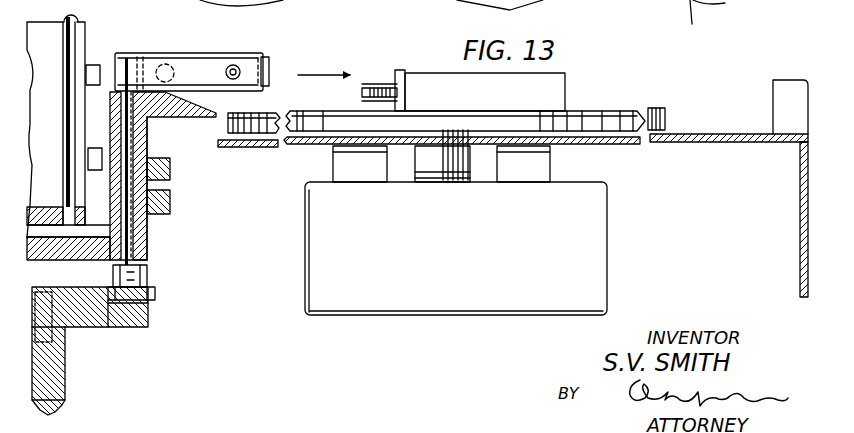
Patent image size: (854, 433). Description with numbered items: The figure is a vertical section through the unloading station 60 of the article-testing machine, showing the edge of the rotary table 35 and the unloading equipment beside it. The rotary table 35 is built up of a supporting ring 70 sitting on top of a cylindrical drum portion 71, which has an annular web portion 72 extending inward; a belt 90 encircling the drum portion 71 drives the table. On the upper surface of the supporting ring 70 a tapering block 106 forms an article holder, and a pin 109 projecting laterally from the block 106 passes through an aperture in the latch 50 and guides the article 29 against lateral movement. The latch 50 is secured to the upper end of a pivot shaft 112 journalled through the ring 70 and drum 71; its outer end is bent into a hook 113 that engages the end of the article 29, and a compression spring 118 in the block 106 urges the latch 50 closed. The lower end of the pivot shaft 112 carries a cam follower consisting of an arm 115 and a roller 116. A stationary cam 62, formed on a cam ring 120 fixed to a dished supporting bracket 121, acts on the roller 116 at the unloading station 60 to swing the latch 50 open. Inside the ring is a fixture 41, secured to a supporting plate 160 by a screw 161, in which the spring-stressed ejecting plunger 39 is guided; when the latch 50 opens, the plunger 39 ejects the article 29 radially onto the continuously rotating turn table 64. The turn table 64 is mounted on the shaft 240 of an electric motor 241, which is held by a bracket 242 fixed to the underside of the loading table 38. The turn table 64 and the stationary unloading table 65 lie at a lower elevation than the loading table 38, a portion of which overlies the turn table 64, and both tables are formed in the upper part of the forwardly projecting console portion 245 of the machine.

The vertically adjustable fixture 41 is at (55, 6).
The screw 161 is at (80, 18).
The ejecting plunger 39 is at (93, 65).
The pivot shaft 112 is at (126, 60).
The compression spring 118 is at (166, 56).
The latch 50 is at (203, 64).
The tapering block 106 is at (234, 65).
The pin 109 is at (236, 68).
The hook 113 is at (270, 82).
The supporting ring 70 is at (156, 118).
The supporting plate 160 is at (40, 213).
The belt 90 is at (171, 201).
The drum portion 71 is at (148, 231).
The rotary table 35 is at (152, 240).
The arm 115 is at (148, 278).
The roller 116 is at (156, 294).
The web portion 72 is at (85, 258).
The stationary cam 62 is at (108, 303).
The cam ring 120 is at (98, 328).
The supporting bracket 121 is at (52, 410).
The unloading station 60 is at (358, 62).
The article 29 is at (566, 80).
The turn table 64 is at (606, 110).
The unloading table 65 is at (704, 133).
The loading table 38 is at (677, 15).
The shaft 240 is at (437, 182).
The electric motor 241 is at (596, 238).
The bracket 242 is at (533, 170).
The console portion 245 is at (805, 237).